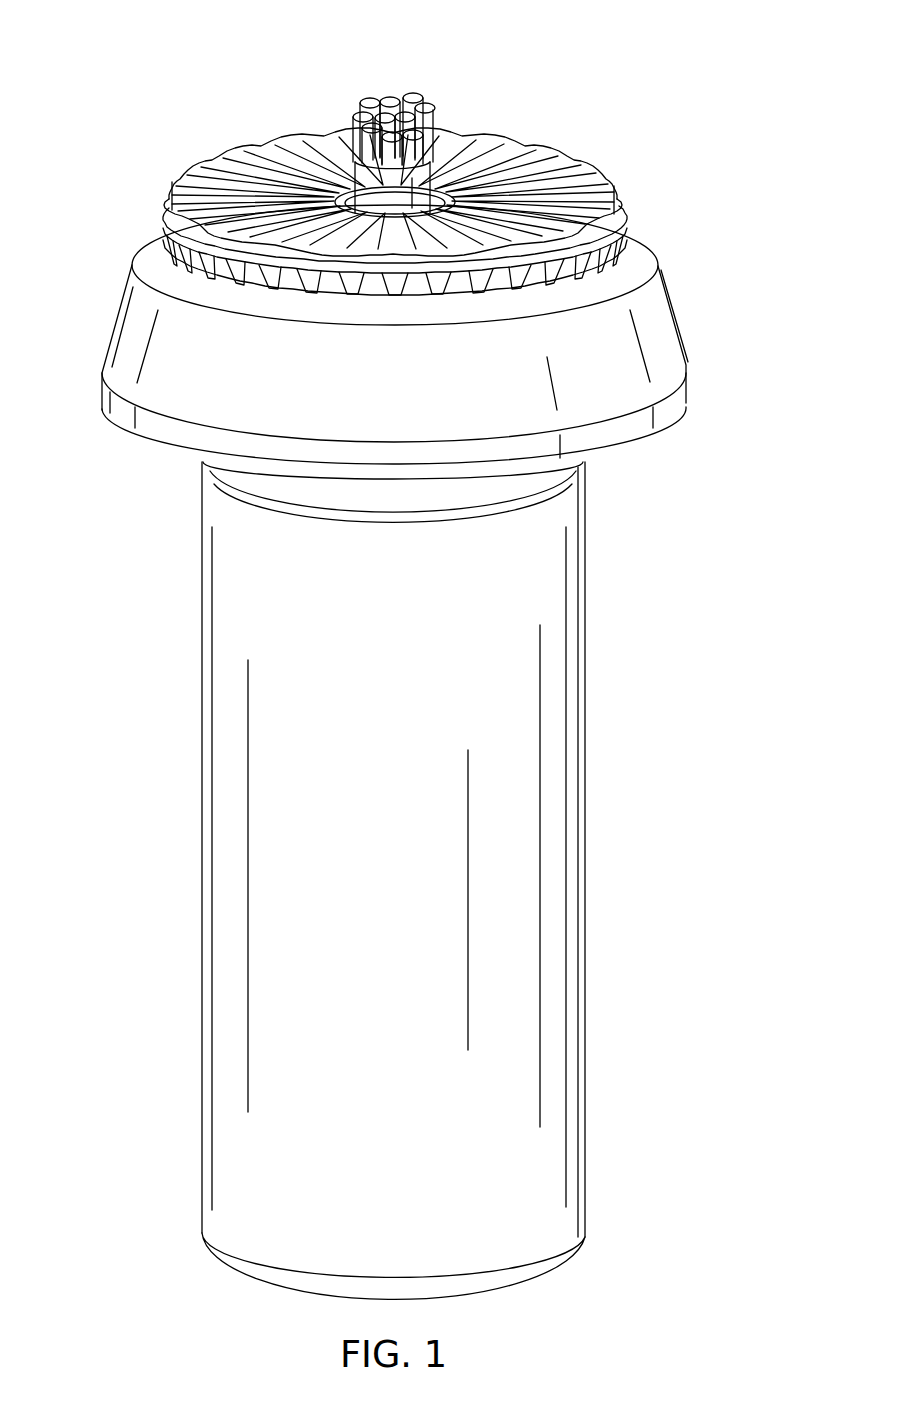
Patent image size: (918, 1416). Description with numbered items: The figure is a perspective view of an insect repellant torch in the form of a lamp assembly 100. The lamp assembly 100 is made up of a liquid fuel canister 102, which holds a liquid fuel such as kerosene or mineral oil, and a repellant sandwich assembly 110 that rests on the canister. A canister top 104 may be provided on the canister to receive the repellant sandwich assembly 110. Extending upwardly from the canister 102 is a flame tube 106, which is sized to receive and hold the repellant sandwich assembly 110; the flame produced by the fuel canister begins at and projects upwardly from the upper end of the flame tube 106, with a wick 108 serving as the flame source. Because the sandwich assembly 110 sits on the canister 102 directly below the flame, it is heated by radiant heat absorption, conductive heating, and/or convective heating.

The lamp assembly 100 is at (682, 54).
The liquid fuel canister 102 is at (203, 852).
The canister top 104 is at (115, 312).
The flame tube 106 is at (330, 132).
The wick 108 is at (436, 126).
The repellant sandwich assembly 110 is at (568, 121).